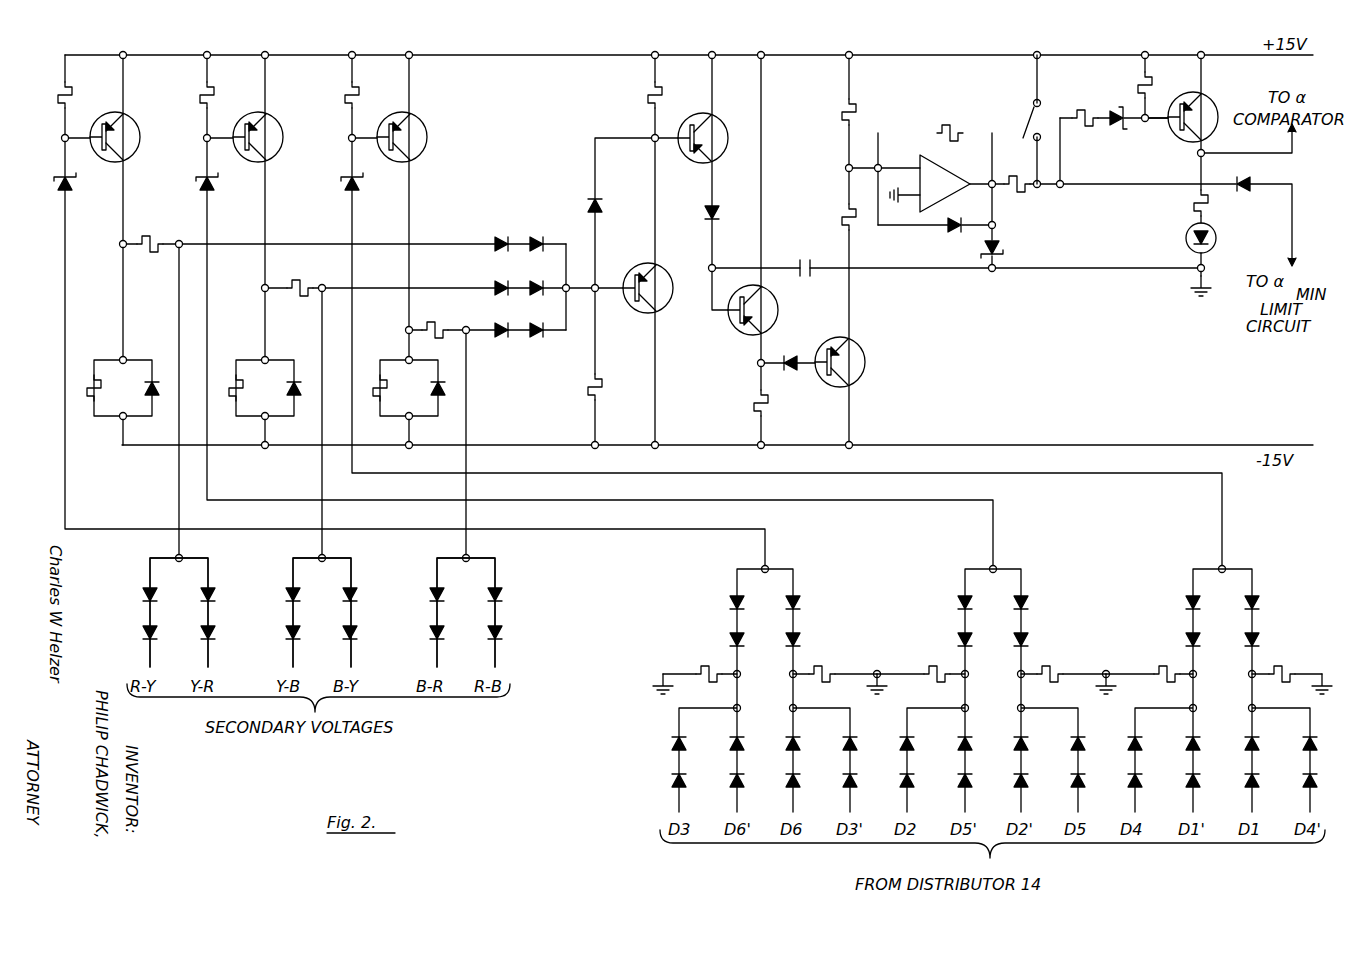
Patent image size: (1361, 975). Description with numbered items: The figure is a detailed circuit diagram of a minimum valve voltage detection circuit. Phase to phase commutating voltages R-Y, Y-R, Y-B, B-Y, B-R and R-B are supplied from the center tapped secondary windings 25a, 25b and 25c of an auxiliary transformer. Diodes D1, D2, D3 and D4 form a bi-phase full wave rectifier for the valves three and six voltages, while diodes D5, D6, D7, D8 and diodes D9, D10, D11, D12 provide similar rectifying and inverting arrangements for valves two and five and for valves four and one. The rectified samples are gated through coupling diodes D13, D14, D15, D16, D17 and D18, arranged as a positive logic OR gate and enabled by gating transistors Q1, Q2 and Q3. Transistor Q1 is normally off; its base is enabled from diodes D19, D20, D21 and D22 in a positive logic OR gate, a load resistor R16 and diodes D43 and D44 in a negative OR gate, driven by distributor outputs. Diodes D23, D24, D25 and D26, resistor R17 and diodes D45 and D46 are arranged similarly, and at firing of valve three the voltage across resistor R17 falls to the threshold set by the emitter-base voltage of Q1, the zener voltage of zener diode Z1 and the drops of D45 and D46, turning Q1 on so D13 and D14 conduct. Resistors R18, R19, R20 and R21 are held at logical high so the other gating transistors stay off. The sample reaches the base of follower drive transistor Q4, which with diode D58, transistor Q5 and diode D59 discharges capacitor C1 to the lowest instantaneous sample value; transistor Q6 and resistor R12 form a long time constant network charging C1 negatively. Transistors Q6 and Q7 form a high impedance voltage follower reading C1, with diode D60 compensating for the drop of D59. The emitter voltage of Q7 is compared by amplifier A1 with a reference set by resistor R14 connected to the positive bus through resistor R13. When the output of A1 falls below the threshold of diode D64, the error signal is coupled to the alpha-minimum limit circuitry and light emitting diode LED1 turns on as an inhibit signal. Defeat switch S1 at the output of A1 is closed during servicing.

The gating transistor Q1 is at (133, 123).
The gating transistor Q2 is at (276, 123).
The gating transistor Q3 is at (420, 123).
The follower drive transistor Q4 is at (636, 308).
The voltage follower drive transistor Q5 is at (720, 122).
The voltage follower load transistor Q6 is at (778, 310).
The voltage follower output transistor Q7 is at (865, 365).
The zener diode Z1 is at (58, 185).
The diode D58 is at (600, 210).
The diode D59 is at (705, 214).
The diode D60 is at (789, 372).
The diode D64 is at (1244, 192).
The resistor R12 is at (754, 406).
The resistor R13 is at (843, 218).
The resistor R14 is at (843, 112).
The load resistor R16 is at (698, 668).
The resistor R17 is at (818, 668).
The resistor R18 is at (942, 668).
The resistor R19 is at (1046, 668).
The resistor R20 is at (1172, 668).
The resistor R21 is at (1278, 668).
The capacitor C1 is at (805, 258).
The amplifier A1 is at (945, 166).
The defeat switch S1 is at (1028, 120).
The light emitting diode LED1 is at (1186, 238).
The coupling diode D13 is at (497, 238).
The coupling diode D14 is at (538, 238).
The coupling diode D15 is at (497, 282).
The coupling diode D16 is at (538, 282).
The coupling diode D17 is at (497, 324).
The coupling diode D18 is at (538, 324).
The rectifying diode D1 is at (143, 596).
The rectifying diode D2 is at (143, 634).
The rectifying diode D3 is at (213, 600).
The rectifying diode D4 is at (213, 638).
The rectifying diode D5 is at (287, 596).
The rectifying diode D6 is at (287, 634).
The rectifying diode D7 is at (355, 600).
The rectifying diode D8 is at (355, 638).
The rectifying diode D9 is at (431, 596).
The rectifying diode D10 is at (431, 634).
The rectifying diode D11 is at (500, 600).
The rectifying diode D12 is at (500, 638).
The secondary winding 25a is at (192, 624).
The secondary winding 25b is at (334, 624).
The secondary winding 25c is at (478, 624).
The diode D43 is at (729, 603).
The diode D44 is at (729, 641).
The diode D45 is at (801, 606).
The diode D46 is at (801, 643).
The diode D19 is at (673, 741).
The diode D20 is at (673, 778).
The diode D21 is at (731, 744).
The diode D22 is at (731, 781).
The diode D23 is at (788, 744).
The diode D24 is at (788, 781).
The diode D25 is at (845, 744).
The diode D26 is at (845, 781).